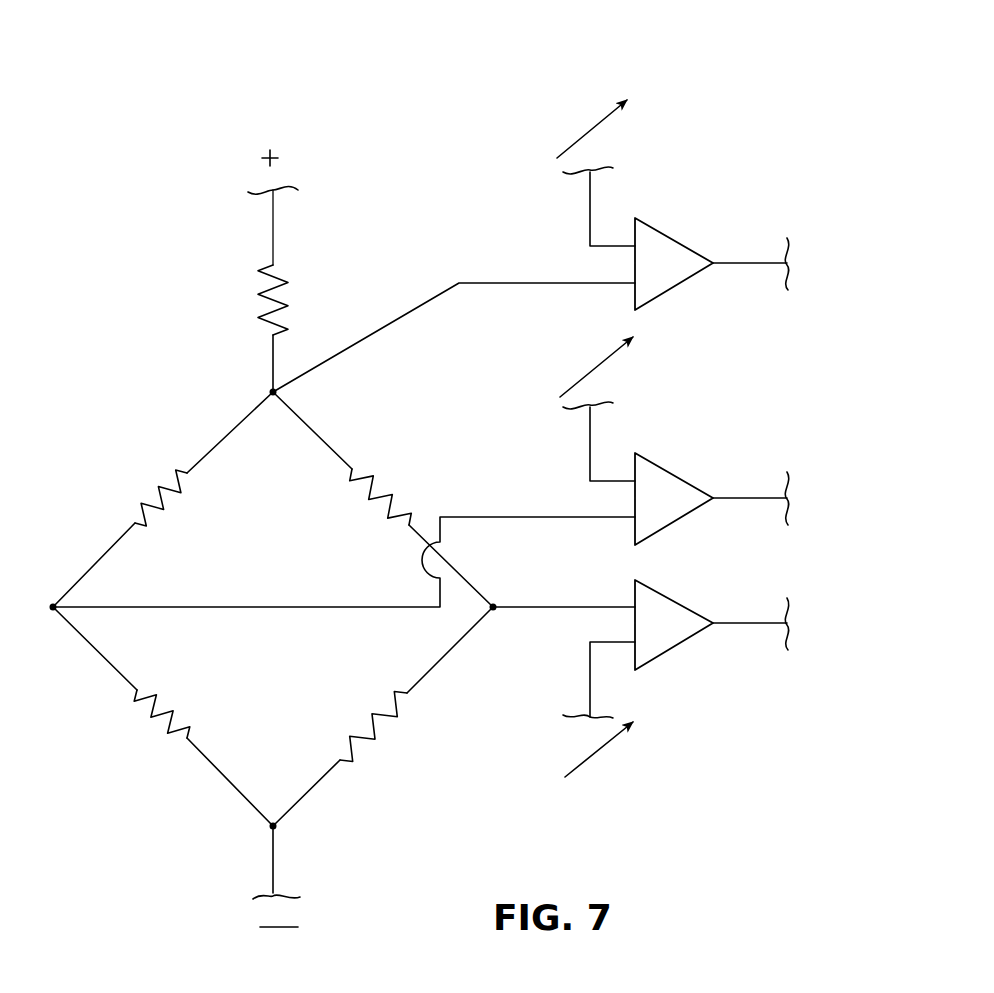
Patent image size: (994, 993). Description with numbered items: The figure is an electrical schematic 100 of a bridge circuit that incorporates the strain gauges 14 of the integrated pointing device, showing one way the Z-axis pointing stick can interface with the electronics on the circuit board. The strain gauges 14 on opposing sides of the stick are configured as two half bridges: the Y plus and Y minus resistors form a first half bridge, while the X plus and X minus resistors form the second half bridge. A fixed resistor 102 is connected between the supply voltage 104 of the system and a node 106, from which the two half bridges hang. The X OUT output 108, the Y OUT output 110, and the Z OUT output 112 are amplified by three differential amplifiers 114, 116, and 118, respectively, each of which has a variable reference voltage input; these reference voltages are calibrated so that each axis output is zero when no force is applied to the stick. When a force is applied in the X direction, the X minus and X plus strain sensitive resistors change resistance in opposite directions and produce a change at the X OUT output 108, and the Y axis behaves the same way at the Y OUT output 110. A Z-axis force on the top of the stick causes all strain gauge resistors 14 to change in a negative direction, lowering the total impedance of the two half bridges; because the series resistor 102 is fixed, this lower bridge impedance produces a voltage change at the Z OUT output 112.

The electrical schematic 100 is at (463, 122).
The strain gauges 14 is at (177, 480).
The fixed resistor 102 is at (260, 303).
The supply voltage 104 is at (242, 190).
The node 106 is at (270, 390).
The X OUT output 108 is at (542, 608).
The Y OUT output 110 is at (500, 516).
The Z OUT output 112 is at (493, 284).
The differential amplifier 114 is at (682, 628).
The differential amplifier 116 is at (680, 498).
The differential amplifier 118 is at (677, 272).